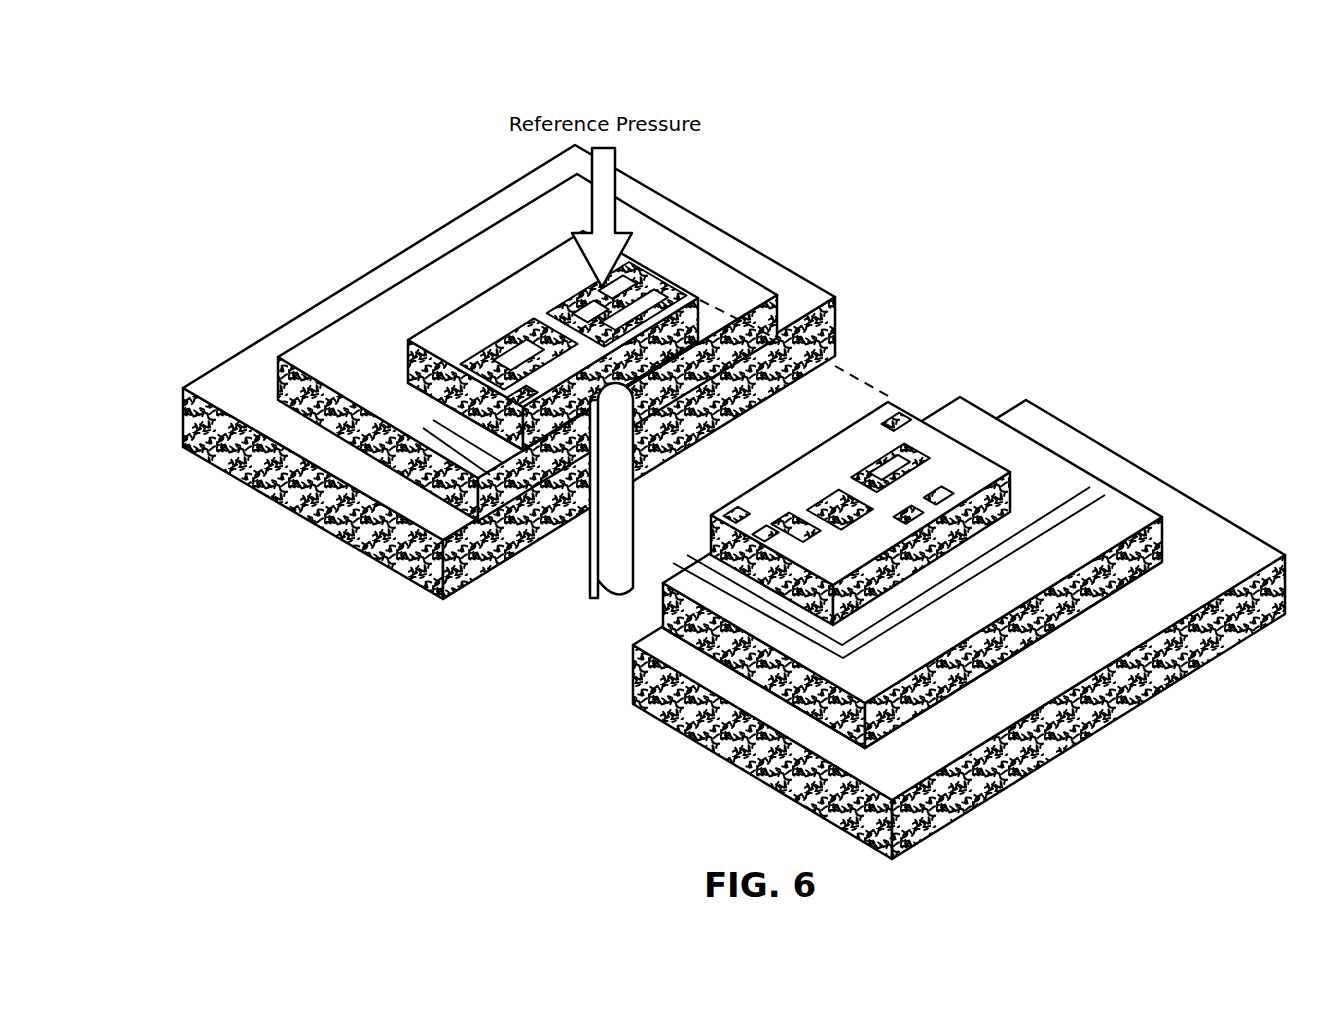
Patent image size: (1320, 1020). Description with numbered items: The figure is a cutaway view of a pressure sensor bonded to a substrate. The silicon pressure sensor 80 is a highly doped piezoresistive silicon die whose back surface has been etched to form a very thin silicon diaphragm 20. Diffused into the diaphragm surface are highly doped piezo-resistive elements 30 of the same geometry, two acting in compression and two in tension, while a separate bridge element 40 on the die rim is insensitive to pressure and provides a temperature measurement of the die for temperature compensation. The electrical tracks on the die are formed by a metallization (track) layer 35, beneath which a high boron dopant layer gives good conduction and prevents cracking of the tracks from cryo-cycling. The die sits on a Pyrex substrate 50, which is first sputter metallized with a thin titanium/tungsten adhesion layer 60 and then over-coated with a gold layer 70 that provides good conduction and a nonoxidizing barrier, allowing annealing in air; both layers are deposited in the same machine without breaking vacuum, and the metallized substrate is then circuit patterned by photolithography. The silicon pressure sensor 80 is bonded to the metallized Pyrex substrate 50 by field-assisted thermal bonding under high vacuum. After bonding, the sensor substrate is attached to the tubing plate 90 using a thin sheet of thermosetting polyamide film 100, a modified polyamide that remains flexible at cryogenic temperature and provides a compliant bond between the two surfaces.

The silicon diaphragm 20 is at (553, 441).
The piezo-resistive elements 30 is at (860, 513).
The metallization (track) layer 35 is at (568, 297).
The bridge element 40 is at (912, 564).
The Pyrex substrate 50 is at (499, 372).
The adhesion layer 60 is at (548, 330).
The gold layer 70 is at (572, 535).
The silicon pressure sensor 80 is at (648, 334).
The tubing plate 90 is at (959, 629).
The thermosetting polyamide film 100 is at (977, 655).